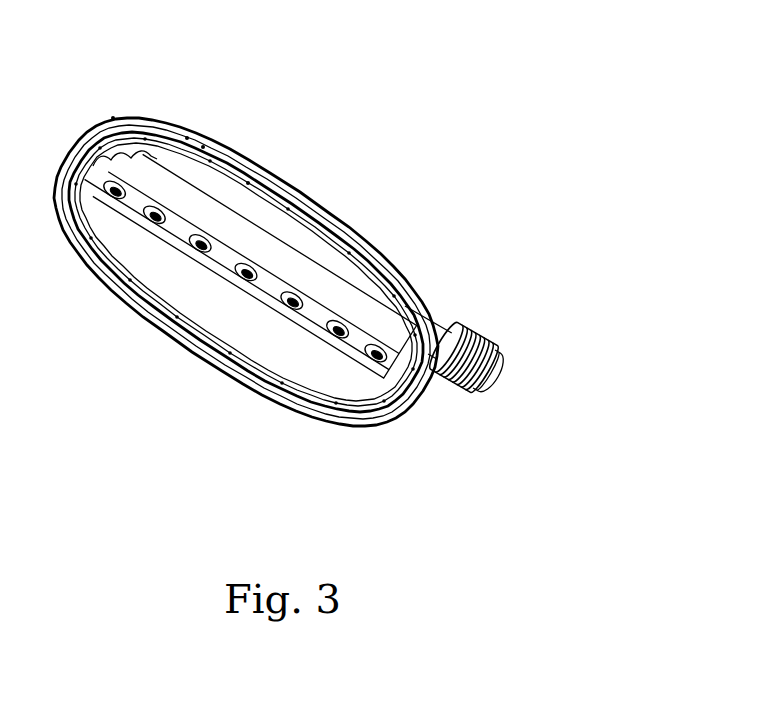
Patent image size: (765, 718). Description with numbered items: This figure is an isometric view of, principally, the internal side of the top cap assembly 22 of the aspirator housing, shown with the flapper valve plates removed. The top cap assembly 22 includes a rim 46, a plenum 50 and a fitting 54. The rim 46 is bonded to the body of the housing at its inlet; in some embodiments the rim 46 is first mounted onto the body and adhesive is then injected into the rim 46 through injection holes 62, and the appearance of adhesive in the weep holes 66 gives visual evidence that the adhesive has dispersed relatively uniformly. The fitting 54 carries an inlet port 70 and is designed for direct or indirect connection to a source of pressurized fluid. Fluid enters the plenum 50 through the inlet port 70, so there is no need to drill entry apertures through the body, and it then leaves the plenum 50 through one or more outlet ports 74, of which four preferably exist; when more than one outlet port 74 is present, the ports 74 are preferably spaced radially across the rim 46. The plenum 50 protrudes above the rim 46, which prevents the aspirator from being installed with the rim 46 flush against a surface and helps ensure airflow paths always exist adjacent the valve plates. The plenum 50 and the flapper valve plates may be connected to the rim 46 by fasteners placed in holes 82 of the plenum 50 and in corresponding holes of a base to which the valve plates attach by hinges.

The top cap assembly 22 is at (371, 84).
The rim 46 is at (383, 258).
The plenum 50 is at (427, 307).
The fitting 54 is at (498, 345).
The injection holes 62 is at (187, 138).
The weep holes 66 is at (113, 118).
The inlet port 70 is at (500, 382).
The outlet ports 74 is at (119, 203).
The holes 82 is at (216, 342).